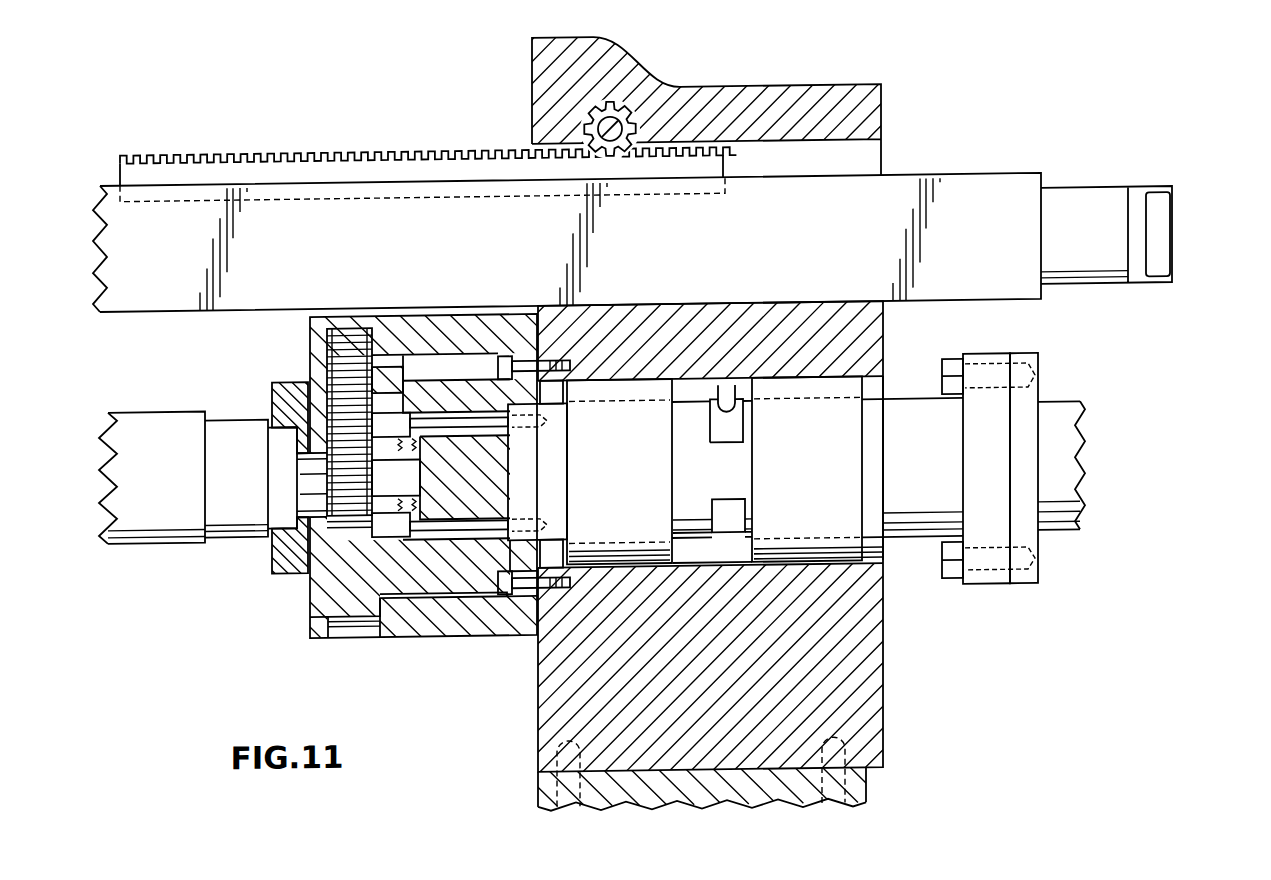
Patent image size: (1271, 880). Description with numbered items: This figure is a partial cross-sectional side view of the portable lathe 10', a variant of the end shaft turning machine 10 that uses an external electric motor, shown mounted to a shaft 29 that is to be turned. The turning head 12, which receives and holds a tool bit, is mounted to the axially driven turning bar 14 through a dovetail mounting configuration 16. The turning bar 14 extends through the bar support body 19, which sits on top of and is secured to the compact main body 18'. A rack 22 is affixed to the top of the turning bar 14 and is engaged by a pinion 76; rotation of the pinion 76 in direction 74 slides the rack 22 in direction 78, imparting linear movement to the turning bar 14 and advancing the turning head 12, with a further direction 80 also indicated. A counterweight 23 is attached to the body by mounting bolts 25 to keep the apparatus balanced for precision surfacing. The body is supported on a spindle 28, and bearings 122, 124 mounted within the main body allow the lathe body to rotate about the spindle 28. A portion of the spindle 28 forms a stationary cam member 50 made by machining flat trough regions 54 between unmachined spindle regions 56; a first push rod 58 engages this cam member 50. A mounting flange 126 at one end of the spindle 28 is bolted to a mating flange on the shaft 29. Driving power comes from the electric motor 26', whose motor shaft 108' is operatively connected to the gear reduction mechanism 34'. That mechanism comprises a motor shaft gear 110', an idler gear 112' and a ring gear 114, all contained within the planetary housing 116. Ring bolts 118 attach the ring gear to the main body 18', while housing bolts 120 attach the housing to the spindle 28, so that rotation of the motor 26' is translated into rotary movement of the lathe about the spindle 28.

The portable lathe 10 is at (1025, 47).
The portable lathe 10' is at (436, 541).
The turning head 12 is at (1162, 246).
The turning bar 14 is at (1010, 188).
The dovetail mounting configuration 16 is at (1130, 179).
The main body 18' is at (744, 536).
The bar support body 19 is at (882, 122).
The rack 22 is at (368, 148).
The counterweight 23 is at (733, 795).
The mounting bolts 25 is at (848, 788).
The electric motor 26' is at (183, 447).
The spindle 28 is at (519, 486).
The shaft 29 is at (1075, 409).
The gear reduction mechanism 34' is at (283, 494).
The stationary cam member 50 is at (735, 465).
The trough regions 54 is at (718, 430).
The spindle regions 56 is at (720, 483).
The first push rod 58 is at (722, 393).
The direction 74 is at (463, 134).
The pinion 76 is at (628, 107).
The direction 78 is at (276, 128).
The direction arrow 80 is at (521, 81).
The motor shaft 108' is at (266, 478).
The motor shaft gear 110' is at (372, 476).
The idler gear 112' is at (343, 386).
The ring gear 114 is at (392, 634).
The planetary housing 116 is at (340, 636).
The ring bolts 118 is at (510, 635).
The housing bolts 120 is at (457, 558).
The bearing 122 is at (592, 485).
The bearing 124 is at (830, 488).
The mounting flange 126 is at (987, 357).